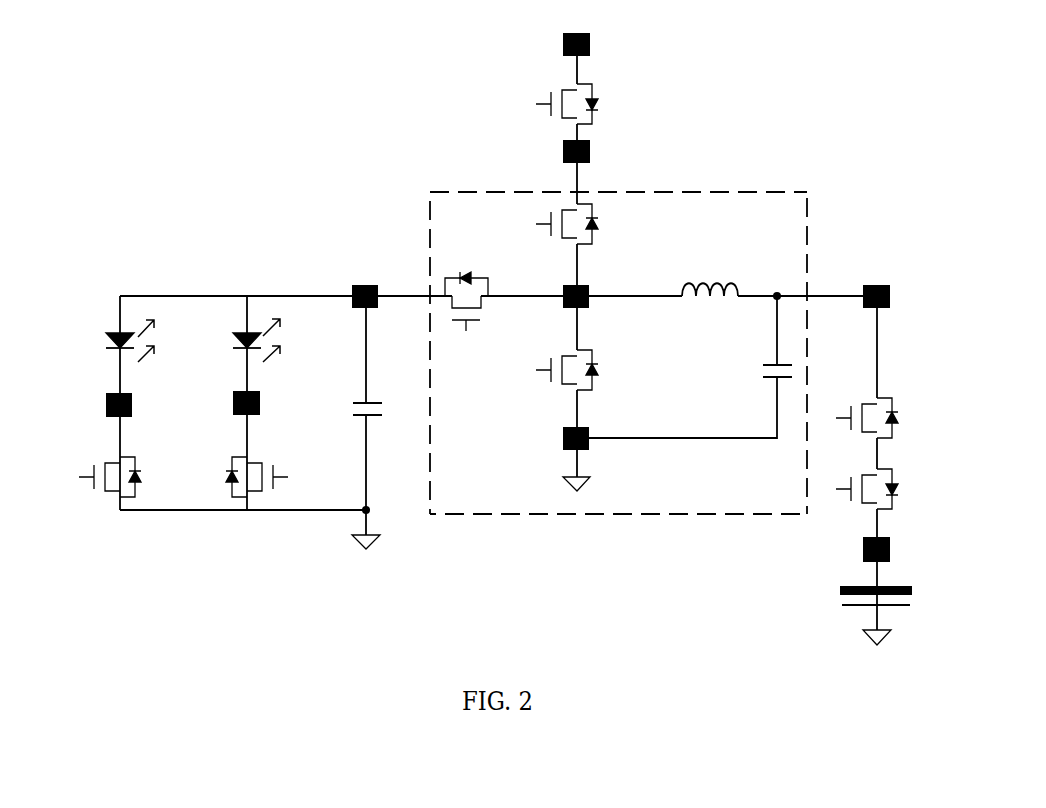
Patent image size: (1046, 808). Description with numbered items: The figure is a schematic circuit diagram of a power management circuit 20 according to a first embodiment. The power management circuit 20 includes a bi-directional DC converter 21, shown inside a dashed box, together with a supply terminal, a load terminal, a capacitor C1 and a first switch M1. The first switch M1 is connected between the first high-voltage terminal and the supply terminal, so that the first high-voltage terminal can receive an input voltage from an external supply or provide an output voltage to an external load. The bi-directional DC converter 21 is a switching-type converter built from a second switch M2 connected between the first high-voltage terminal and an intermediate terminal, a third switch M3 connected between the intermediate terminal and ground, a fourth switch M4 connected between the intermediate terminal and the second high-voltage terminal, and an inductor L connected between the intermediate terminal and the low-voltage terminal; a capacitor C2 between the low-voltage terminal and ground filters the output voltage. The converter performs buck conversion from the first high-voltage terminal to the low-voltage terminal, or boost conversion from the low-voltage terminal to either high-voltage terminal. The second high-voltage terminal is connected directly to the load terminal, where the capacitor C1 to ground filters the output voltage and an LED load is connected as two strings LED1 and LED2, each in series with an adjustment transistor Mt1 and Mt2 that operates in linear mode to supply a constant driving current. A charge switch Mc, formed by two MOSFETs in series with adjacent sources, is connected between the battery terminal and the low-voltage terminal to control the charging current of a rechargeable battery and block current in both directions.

The power management circuit 20 is at (177, 117).
The bi-directional DC converter 21 is at (788, 192).
The first switch M1 is at (590, 104).
The second switch M2 is at (590, 224).
The third switch M3 is at (591, 370).
The fourth switch M4 is at (466, 286).
The charge switch Mc is at (900, 453).
The inductor L is at (710, 271).
The capacitor C1 is at (344, 409).
The capacitor C2 is at (690, 367).
The LED string LED1 is at (98, 341).
The LED string LED2 is at (222, 340).
The adjustment transistor Mt1 is at (133, 477).
The adjustment transistor Mt2 is at (286, 477).